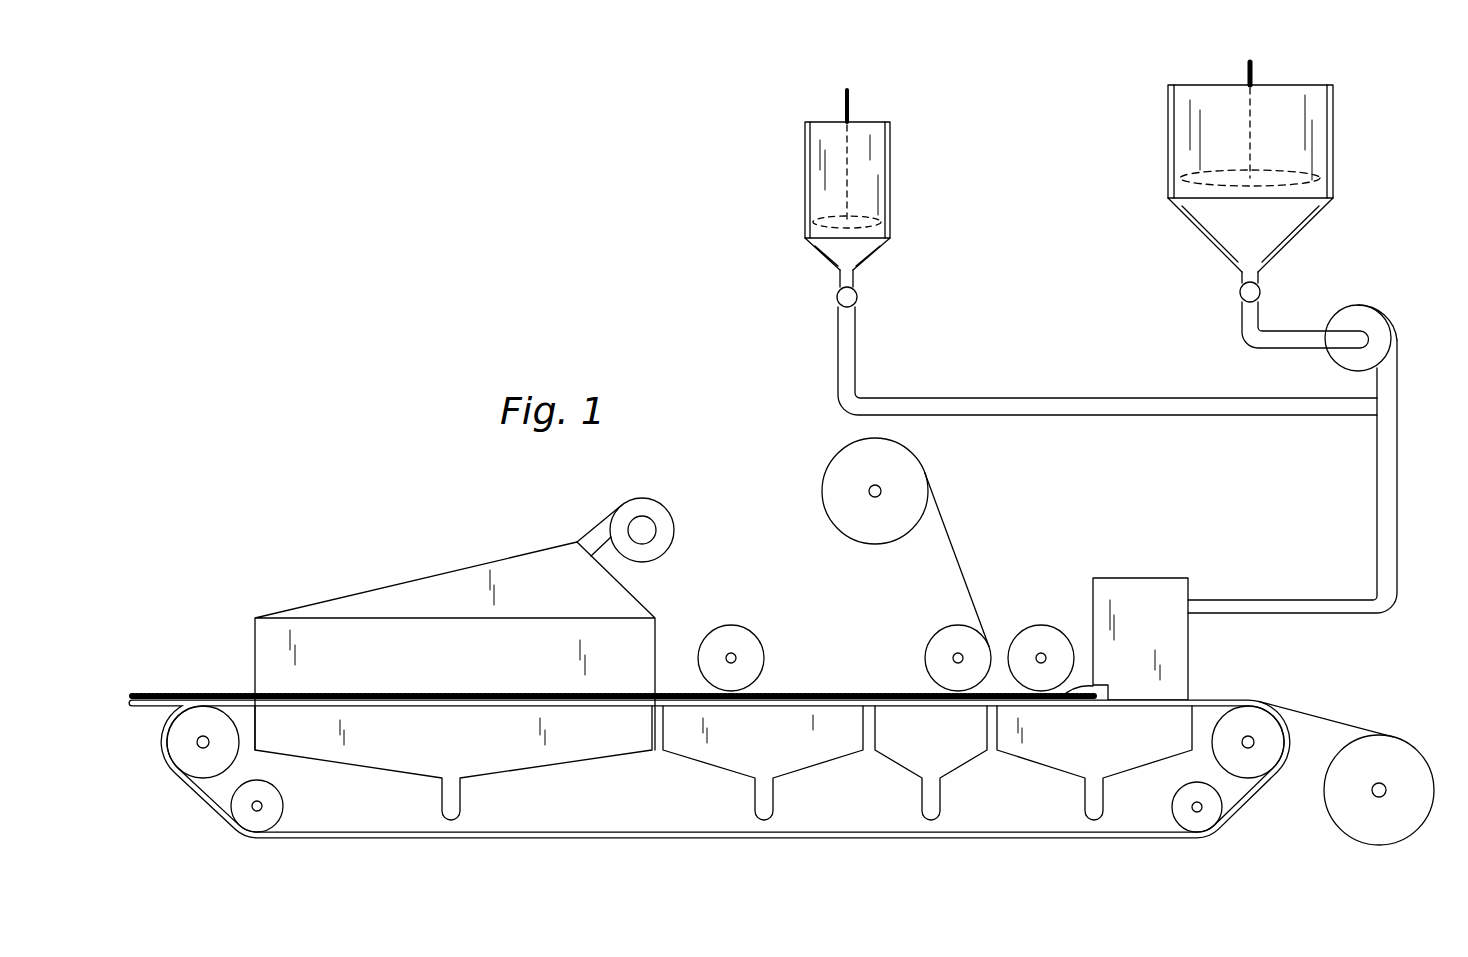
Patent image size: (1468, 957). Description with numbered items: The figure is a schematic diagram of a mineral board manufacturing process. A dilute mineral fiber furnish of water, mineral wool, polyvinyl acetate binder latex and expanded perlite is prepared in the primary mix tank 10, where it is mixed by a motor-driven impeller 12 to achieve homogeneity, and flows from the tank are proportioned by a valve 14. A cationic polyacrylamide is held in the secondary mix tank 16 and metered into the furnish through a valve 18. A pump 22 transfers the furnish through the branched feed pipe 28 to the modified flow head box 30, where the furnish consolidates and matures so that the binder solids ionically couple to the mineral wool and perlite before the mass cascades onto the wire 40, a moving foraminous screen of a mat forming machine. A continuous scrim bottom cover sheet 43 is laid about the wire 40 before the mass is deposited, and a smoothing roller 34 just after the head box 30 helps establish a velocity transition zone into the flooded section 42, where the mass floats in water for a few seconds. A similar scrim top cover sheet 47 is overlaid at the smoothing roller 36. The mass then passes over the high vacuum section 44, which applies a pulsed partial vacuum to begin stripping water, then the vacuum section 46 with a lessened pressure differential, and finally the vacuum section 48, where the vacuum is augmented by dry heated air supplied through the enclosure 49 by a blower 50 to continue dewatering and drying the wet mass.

The primary mix tank 10 is at (1333, 146).
The motor-driven impeller 12 is at (1257, 72).
The valve 14 is at (1240, 292).
The secondary mix tank 16 is at (890, 202).
The valve 18 is at (858, 297).
The pump 22 is at (1393, 308).
The branched feed pipe 28 is at (1268, 614).
The modified flow head box 30 is at (1190, 580).
The smoothing roller 34 is at (1058, 624).
The smoothing roller 36 is at (928, 648).
The wire 40 is at (1268, 824).
The flooded section 42 is at (1070, 763).
The scrim bottom cover sheet 43 is at (1340, 723).
The high vacuum section 44 is at (918, 763).
The vacuum section 46 is at (733, 764).
The scrim top cover sheet 47 is at (958, 560).
The vacuum section 48 is at (525, 762).
The enclosure 49 is at (255, 657).
The blower 50 is at (660, 503).